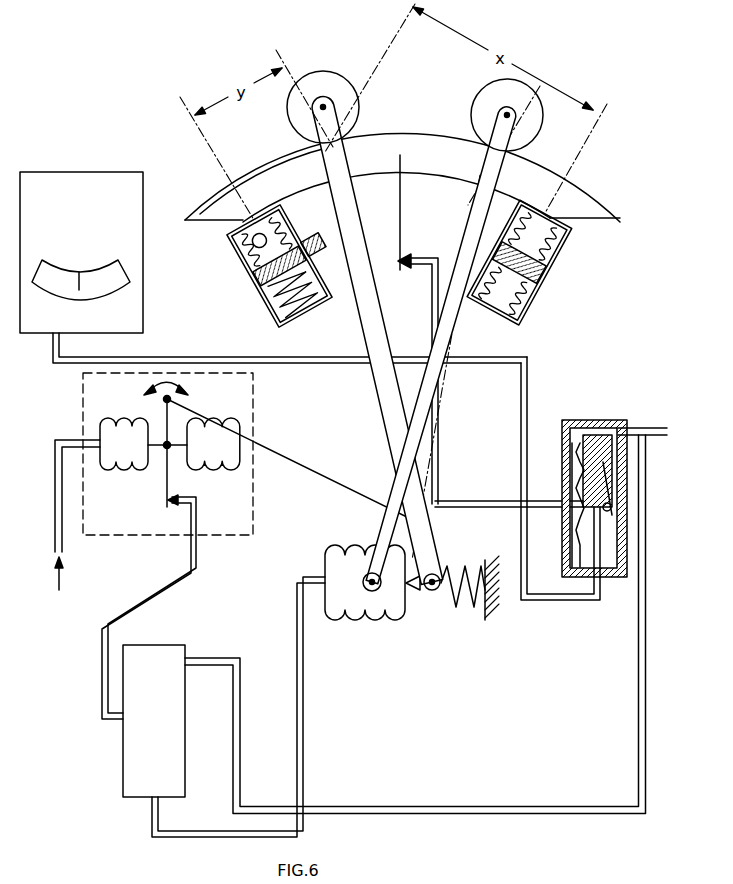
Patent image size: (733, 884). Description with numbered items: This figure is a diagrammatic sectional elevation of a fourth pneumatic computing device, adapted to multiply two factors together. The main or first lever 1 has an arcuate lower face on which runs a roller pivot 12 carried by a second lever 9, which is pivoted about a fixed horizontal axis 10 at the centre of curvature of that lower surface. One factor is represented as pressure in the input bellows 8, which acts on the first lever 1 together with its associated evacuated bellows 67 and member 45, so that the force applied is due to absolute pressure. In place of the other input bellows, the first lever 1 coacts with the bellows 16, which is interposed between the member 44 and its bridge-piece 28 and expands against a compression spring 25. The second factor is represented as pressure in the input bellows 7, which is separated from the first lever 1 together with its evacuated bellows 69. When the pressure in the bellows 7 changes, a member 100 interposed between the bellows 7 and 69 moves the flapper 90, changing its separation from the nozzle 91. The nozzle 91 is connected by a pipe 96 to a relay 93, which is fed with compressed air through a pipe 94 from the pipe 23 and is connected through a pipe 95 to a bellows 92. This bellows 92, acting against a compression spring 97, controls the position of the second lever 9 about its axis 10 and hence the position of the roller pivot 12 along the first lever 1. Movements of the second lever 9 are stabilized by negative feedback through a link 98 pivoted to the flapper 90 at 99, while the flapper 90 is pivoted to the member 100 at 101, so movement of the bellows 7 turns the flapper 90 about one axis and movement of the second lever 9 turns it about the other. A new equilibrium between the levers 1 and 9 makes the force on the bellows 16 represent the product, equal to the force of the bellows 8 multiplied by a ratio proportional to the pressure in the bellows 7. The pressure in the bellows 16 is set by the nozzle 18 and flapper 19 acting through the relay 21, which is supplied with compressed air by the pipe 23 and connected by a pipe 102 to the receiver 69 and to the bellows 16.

The first lever 1 is at (408, 142).
The input bellows 7 is at (120, 433).
The input bellows 8 is at (541, 243).
The second lever 9 is at (378, 378).
The horizontal axis 10 is at (401, 471).
The roller pivot 12 is at (321, 82).
The third bellows 16 is at (256, 243).
The nozzle 18 is at (408, 268).
The flapper 19 is at (400, 217).
The relay 21 is at (562, 549).
The pipe 23 is at (657, 435).
The compression spring 25 is at (280, 303).
The bridge-piece 28 is at (263, 164).
The member 44 is at (290, 250).
The member 45 is at (553, 265).
The evacuated bellows 67 is at (510, 298).
The evacuated bellows 69 is at (125, 215).
The flapper 90 is at (165, 487).
The nozzle 91 is at (172, 507).
The bellows 92 is at (379, 596).
The relay 93 is at (127, 753).
The pipe 94 is at (462, 806).
The pipe 95 is at (298, 709).
The pipe 96 is at (102, 683).
The compression spring 97 is at (470, 608).
The link 98 is at (338, 482).
The pivot 99 is at (172, 399).
The member 100 is at (165, 443).
The pivot 101 is at (170, 448).
The pipe 102 is at (527, 433).